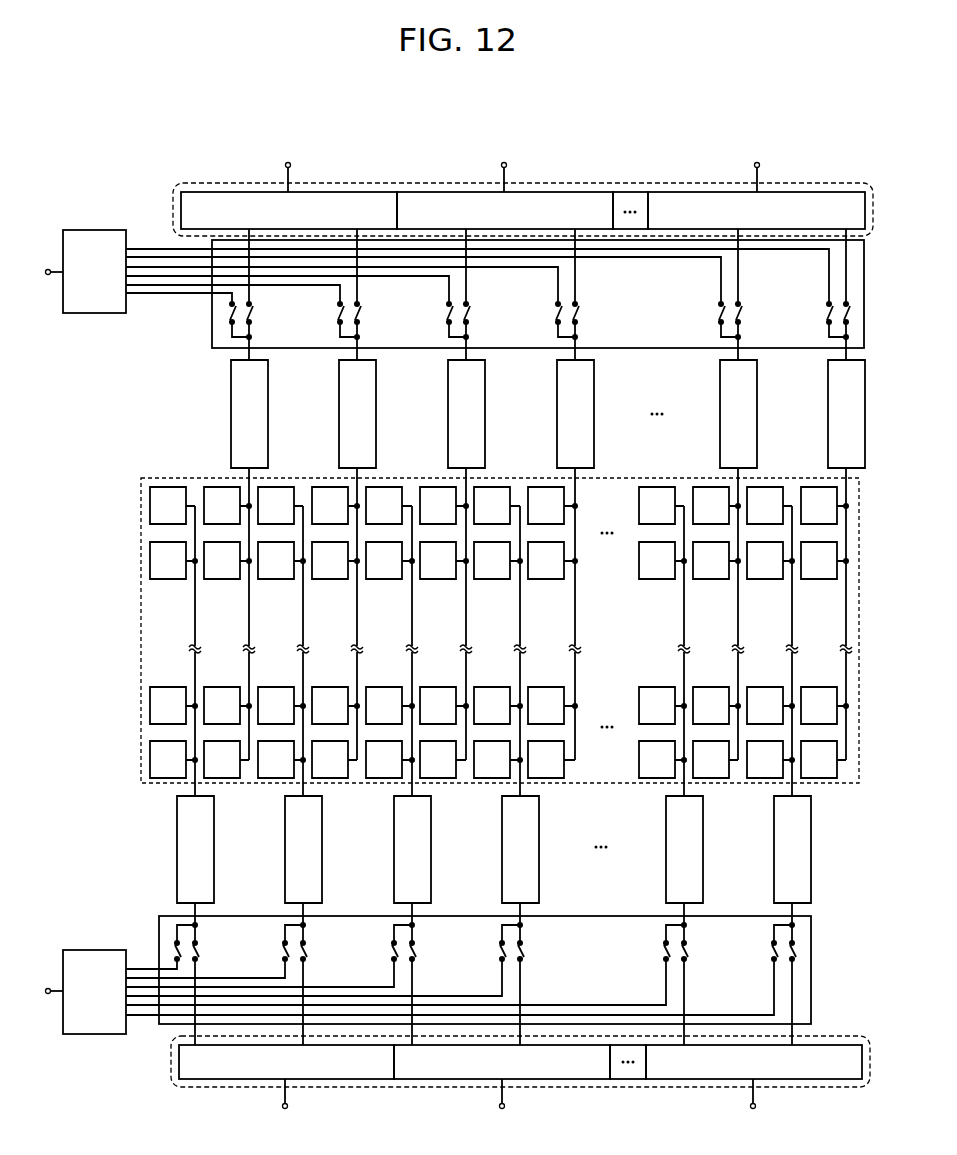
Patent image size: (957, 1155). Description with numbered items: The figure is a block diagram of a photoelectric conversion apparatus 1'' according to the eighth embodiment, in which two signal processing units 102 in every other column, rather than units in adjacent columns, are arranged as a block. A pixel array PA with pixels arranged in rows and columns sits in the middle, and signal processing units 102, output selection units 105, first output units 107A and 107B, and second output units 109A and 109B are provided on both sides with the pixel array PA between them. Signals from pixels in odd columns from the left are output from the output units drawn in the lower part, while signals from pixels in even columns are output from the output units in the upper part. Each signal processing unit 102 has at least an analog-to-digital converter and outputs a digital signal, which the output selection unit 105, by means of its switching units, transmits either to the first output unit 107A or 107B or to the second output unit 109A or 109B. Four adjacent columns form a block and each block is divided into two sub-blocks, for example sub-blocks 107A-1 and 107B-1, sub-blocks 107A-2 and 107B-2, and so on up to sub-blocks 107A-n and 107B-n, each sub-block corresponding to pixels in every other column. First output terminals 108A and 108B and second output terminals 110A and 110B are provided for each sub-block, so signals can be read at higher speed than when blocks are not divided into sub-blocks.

The photoelectric conversion apparatus 1'' is at (460, 606).
The signal processing unit 102 is at (231, 416).
The output selection unit 105 is at (212, 346).
The first output unit 107A is at (178, 1086).
The sub-block 107A-1 is at (243, 1082).
The sub-block 107A-2 is at (540, 1082).
The sub-block 107A-n is at (808, 1082).
The first output unit 107B is at (197, 187).
The sub-block 107B-1 is at (378, 190).
The sub-block 107B-2 is at (548, 190).
The sub-block 107B-n is at (790, 190).
The first output terminal 108A is at (290, 1107).
The first output terminal 108B is at (290, 165).
The second output unit 109A is at (100, 1036).
The second output unit 109B is at (100, 315).
The second output terminal 110A is at (48, 987).
The second output terminal 110B is at (48, 268).
The pixel array PA is at (152, 478).